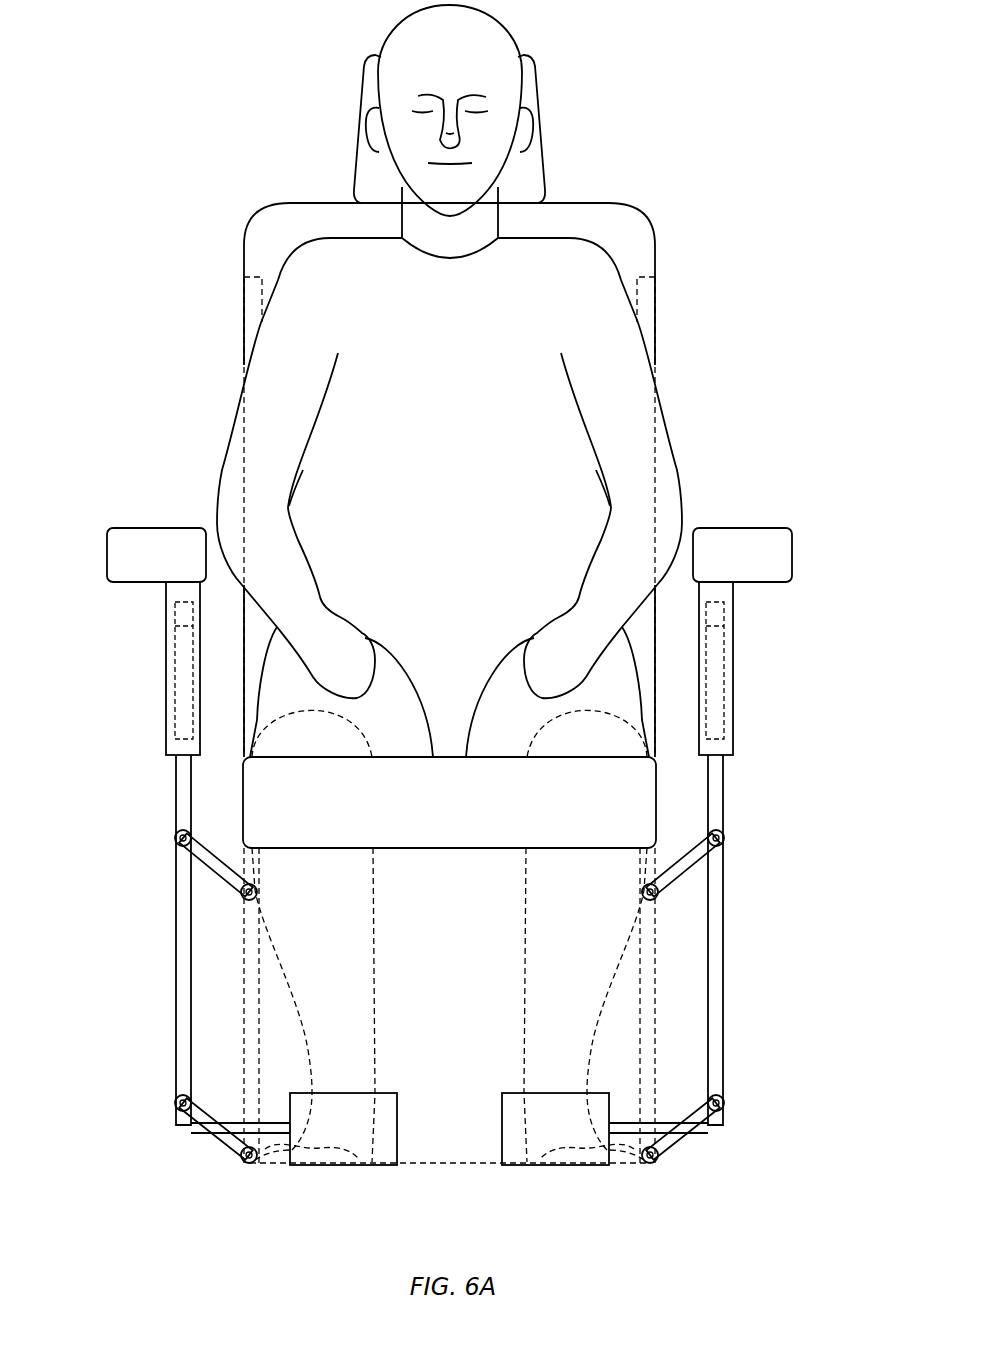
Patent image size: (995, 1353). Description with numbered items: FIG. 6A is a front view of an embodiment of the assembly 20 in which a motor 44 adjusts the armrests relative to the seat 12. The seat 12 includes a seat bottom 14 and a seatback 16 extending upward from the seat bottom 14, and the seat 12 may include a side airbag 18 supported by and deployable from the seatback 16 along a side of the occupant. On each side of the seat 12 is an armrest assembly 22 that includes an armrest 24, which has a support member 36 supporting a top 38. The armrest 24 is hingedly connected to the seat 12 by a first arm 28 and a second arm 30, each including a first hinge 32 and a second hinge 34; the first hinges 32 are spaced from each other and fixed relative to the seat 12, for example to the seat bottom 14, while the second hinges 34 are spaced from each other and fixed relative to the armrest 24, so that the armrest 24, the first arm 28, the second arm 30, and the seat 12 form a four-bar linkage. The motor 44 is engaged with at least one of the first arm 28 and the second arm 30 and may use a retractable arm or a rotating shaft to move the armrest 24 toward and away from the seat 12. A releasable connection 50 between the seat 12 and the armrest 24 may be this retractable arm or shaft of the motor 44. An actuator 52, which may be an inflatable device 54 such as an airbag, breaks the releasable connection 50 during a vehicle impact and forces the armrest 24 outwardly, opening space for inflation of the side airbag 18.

The assembly 20 is at (188, 92).
The seat 12 is at (694, 360).
The seat bottom 14 is at (412, 1165).
The seatback 16 is at (572, 215).
The side airbag 18 is at (250, 310).
The armrest assembly 22 is at (120, 986).
The armrest 24 is at (450, 612).
The first arm 28 is at (205, 1130).
The second arm 30 is at (215, 868).
The first hinge 32 is at (241, 894).
The second hinge 34 is at (176, 838).
The support member 36 is at (176, 768).
The top 38 is at (148, 537).
The motor 44 is at (381, 1092).
The releasable connection 50 is at (268, 1122).
The actuator 52 is at (450, 670).
The inflatable device 54 is at (185, 652).